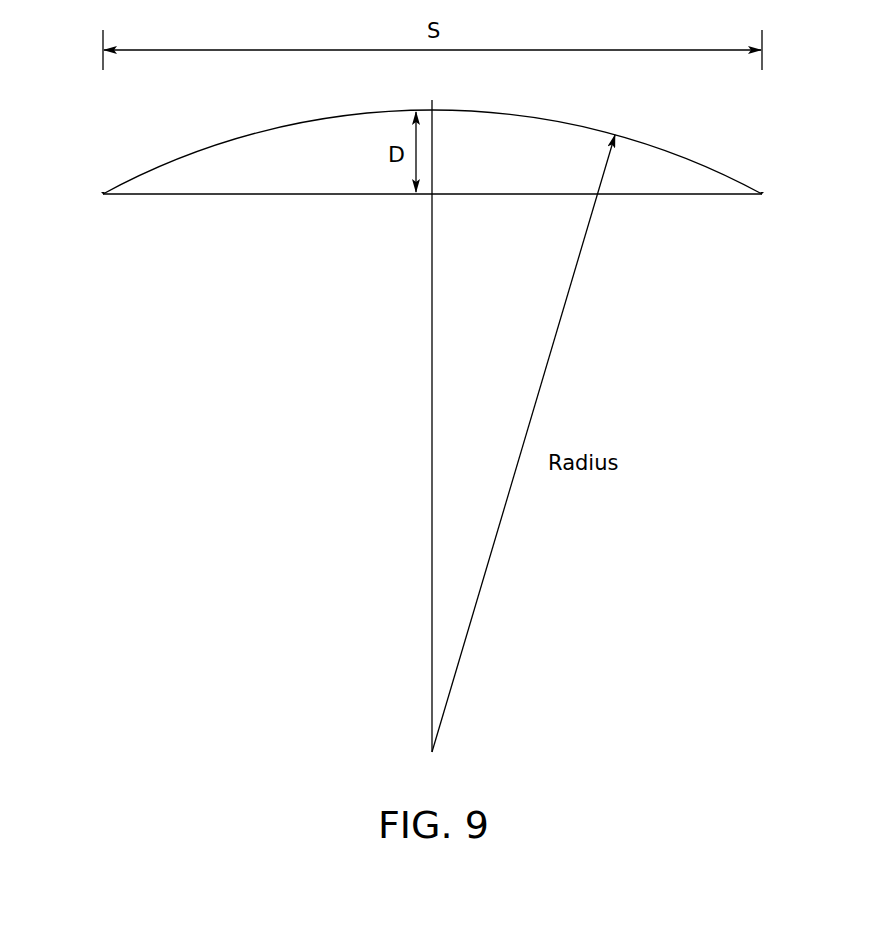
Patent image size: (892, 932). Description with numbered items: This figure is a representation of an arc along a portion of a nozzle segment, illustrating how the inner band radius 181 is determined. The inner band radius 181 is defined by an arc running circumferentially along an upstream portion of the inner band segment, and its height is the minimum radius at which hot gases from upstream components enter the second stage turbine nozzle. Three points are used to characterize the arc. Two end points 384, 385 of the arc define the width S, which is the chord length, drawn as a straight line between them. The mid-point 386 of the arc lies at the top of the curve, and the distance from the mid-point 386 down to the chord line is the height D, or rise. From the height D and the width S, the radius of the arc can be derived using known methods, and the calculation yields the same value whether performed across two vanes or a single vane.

The inner band radius 181 is at (180, 236).
The end point 384 is at (104, 193).
The end point 385 is at (761, 194).
The mid-point 386 is at (432, 100).